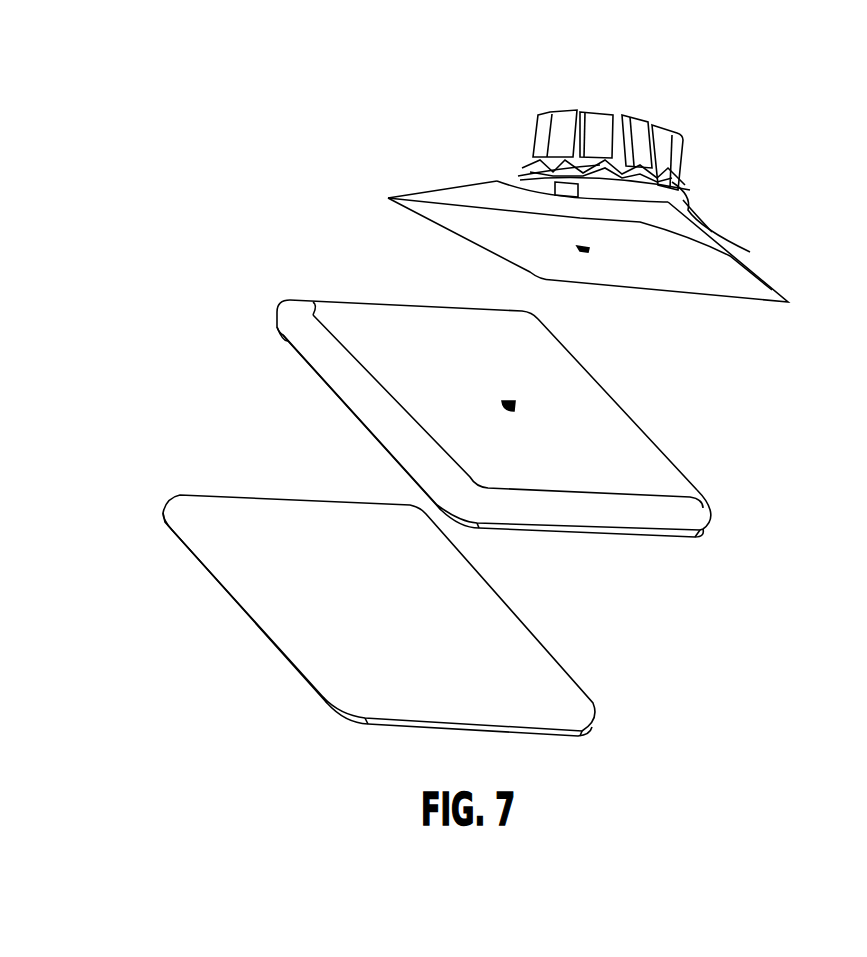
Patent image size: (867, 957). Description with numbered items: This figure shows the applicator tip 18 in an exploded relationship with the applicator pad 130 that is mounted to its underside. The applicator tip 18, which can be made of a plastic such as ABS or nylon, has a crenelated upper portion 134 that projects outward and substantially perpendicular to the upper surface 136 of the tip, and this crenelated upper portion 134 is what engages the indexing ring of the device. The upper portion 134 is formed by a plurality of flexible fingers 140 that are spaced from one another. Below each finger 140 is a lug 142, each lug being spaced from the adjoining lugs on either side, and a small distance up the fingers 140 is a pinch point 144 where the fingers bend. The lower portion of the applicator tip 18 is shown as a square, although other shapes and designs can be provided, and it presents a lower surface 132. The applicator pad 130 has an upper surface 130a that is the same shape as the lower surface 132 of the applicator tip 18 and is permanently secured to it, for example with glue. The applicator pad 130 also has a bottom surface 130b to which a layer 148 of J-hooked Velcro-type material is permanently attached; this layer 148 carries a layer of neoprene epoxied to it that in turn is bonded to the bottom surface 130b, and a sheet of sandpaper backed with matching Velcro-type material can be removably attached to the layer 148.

The applicator tip 18 is at (718, 215).
The applicator pad 130 is at (623, 432).
The upper surface of applicator pad 130a is at (390, 360).
The bottom surface of applicator pad 130b is at (602, 527).
The lower surface of applicator tip 132 is at (693, 281).
The crenelated upper portion 134 is at (523, 140).
The upper surface of applicator tip 136 is at (730, 260).
The flexible fingers 140 is at (627, 117).
The lug 142 is at (552, 168).
The pinch point 144 is at (628, 120).
The layer of J-hooked Velcro-type material 148 is at (670, 540).